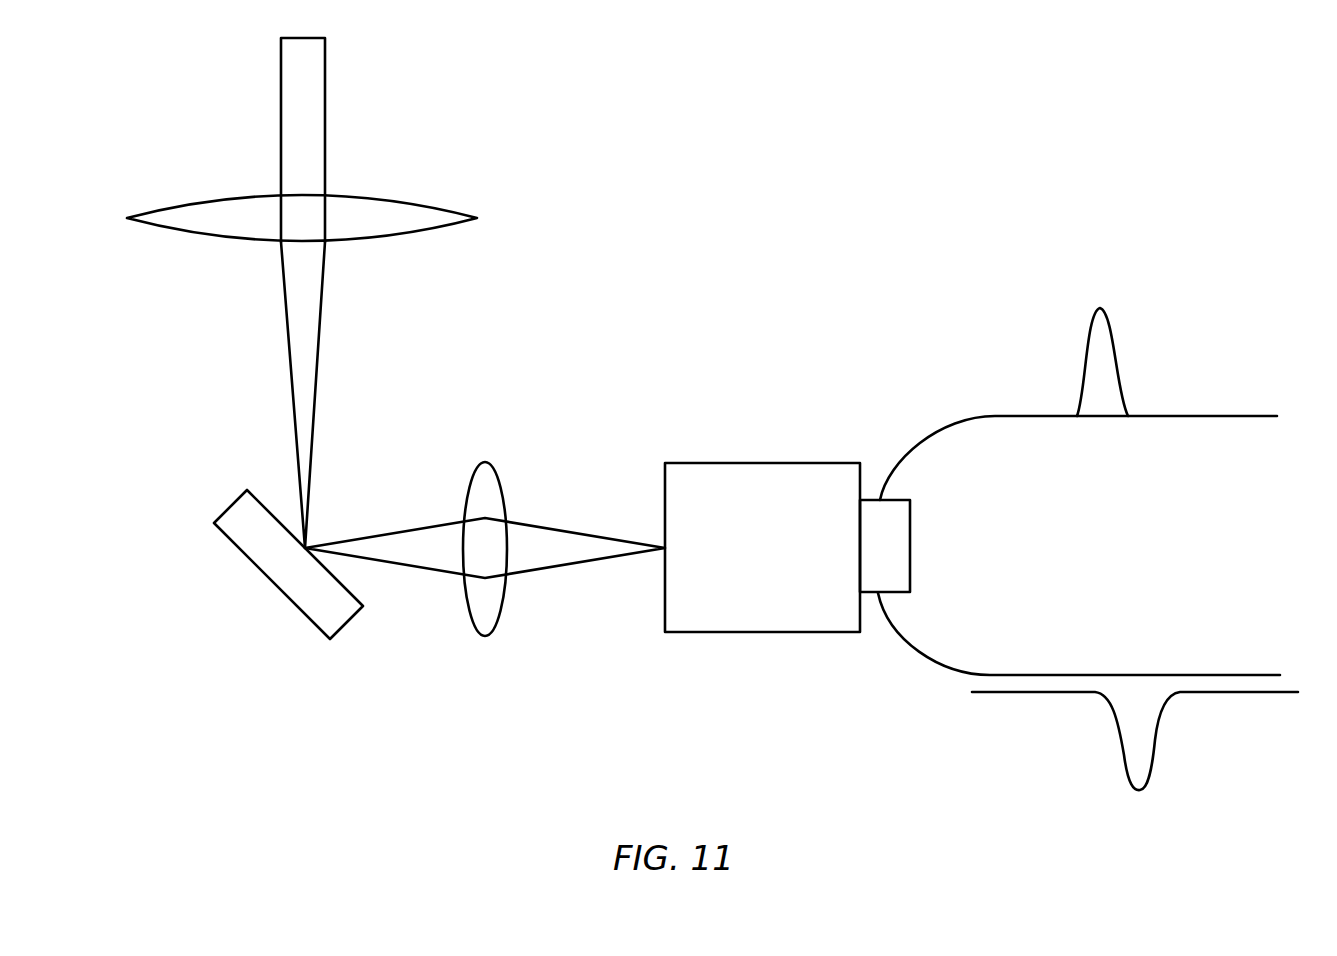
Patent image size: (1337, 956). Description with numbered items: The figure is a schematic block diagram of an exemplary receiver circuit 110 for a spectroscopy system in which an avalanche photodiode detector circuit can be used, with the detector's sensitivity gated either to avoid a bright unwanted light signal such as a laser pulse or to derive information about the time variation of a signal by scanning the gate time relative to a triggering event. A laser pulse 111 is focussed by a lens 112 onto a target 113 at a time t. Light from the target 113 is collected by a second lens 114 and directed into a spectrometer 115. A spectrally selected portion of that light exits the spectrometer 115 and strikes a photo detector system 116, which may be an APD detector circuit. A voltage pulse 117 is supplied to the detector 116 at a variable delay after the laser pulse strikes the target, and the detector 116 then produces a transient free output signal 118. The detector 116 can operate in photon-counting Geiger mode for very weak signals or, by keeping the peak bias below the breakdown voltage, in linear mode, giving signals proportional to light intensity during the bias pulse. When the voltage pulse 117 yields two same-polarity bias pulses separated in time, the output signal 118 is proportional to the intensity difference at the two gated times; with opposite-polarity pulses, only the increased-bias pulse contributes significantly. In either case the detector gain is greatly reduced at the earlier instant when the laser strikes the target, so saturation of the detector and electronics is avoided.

The receiver circuit 110 is at (828, 245).
The laser pulse 111 is at (325, 67).
The lens 112 is at (477, 213).
The target 113 is at (238, 552).
The lens 114 is at (484, 462).
The spectrometer 115 is at (742, 463).
The photo detector system 116 is at (910, 518).
The voltage pulse 117 is at (1112, 315).
The transient free output signal 118 is at (1152, 742).